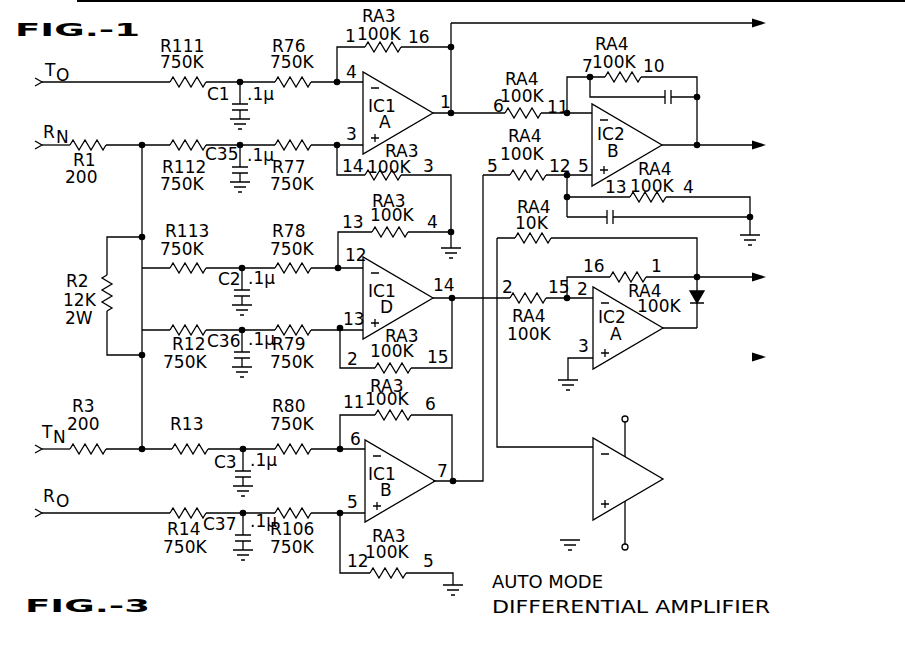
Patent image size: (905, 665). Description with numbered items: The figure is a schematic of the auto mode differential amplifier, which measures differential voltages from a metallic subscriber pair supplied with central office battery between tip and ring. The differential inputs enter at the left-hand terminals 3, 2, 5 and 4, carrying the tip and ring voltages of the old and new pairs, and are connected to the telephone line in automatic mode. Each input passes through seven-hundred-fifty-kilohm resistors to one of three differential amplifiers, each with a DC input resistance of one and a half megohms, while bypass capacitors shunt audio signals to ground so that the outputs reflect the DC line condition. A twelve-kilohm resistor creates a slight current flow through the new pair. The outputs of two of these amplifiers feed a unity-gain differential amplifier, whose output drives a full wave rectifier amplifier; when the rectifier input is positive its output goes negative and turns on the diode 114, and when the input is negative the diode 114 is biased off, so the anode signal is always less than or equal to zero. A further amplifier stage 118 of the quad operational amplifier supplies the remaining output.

The diode 114 is at (705, 306).
The operational amplifier IC1C 118 is at (630, 473).
The input terminal 2 (RN) 2 is at (41, 145).
The input terminal 3 (TO) 3 is at (91, 82).
The input terminal 4 (RO) 4 is at (91, 513).
The input terminal 5 (TN) 5 is at (41, 449).